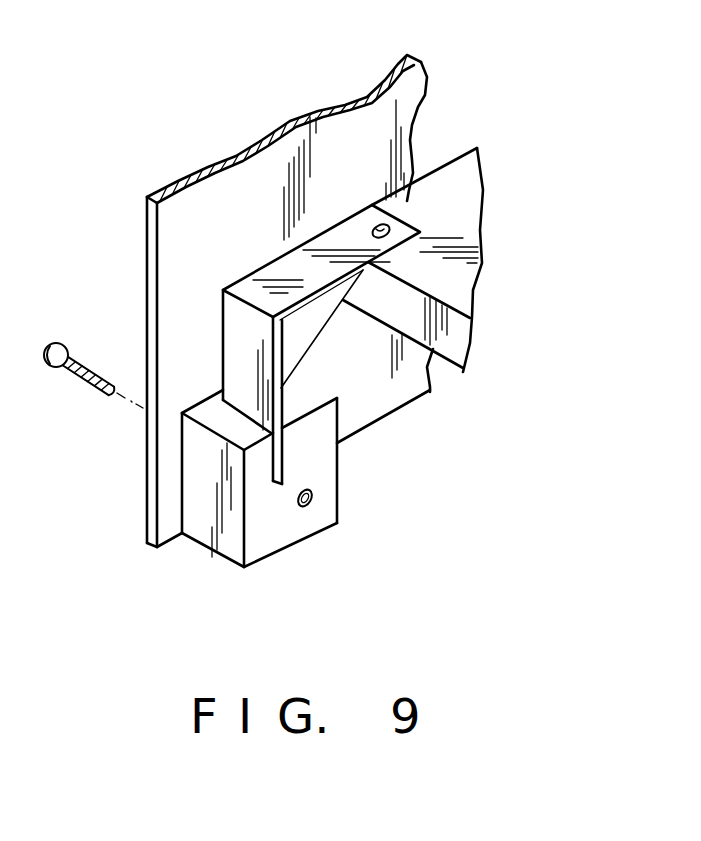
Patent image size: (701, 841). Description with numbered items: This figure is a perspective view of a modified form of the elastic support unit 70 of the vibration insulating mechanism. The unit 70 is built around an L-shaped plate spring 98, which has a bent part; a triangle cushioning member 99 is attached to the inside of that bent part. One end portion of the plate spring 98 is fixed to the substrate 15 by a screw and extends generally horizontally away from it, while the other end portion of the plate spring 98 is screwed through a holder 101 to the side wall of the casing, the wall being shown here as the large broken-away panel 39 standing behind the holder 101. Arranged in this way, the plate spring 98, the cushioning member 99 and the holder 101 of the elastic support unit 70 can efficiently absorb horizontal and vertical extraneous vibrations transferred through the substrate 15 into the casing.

The panel 39 is at (312, 130).
The L-shaped plate spring 98 is at (247, 283).
The triangle cushioning member 99 is at (320, 330).
The substrate 15 is at (471, 210).
The elastic support unit 70 is at (386, 434).
The holder 101 is at (278, 533).